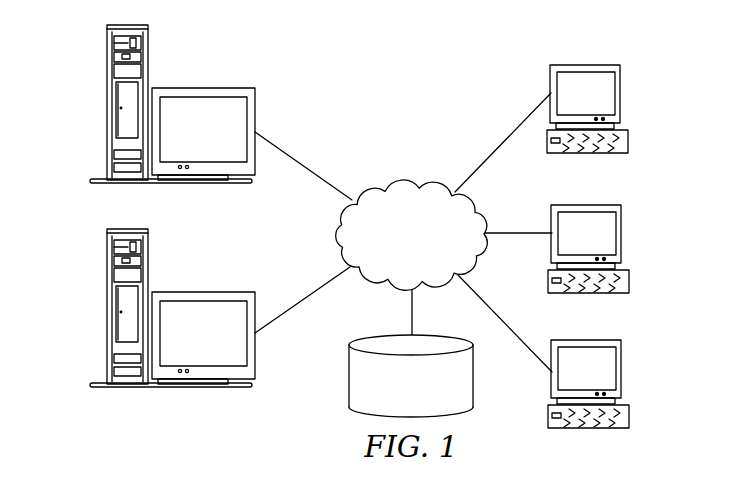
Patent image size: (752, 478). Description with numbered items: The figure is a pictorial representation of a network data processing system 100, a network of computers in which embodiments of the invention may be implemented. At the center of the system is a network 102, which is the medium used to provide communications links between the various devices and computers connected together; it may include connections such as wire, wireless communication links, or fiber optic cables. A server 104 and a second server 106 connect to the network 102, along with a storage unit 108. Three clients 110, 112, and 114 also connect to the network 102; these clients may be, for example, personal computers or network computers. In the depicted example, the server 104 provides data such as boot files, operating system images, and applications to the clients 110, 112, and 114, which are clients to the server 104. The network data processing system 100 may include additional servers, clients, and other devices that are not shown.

The network data processing system 100 is at (462, 71).
The network 102 is at (382, 187).
The server 104 is at (106, 105).
The server 106 is at (107, 308).
The storage unit 108 is at (348, 388).
The client 110 is at (621, 93).
The client 112 is at (623, 233).
The client 114 is at (624, 370).